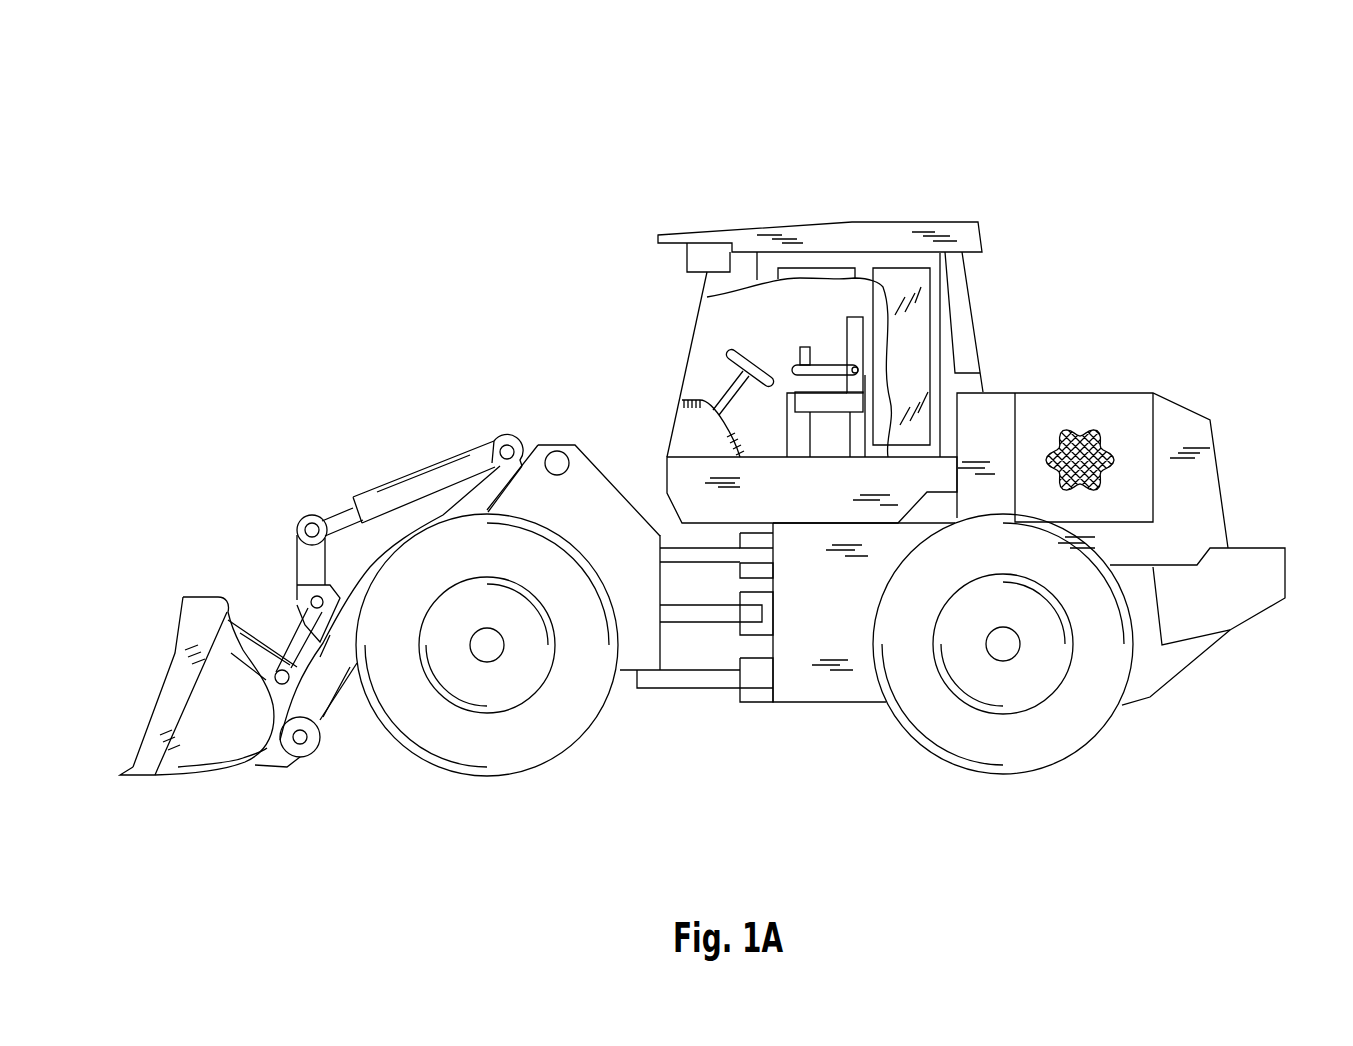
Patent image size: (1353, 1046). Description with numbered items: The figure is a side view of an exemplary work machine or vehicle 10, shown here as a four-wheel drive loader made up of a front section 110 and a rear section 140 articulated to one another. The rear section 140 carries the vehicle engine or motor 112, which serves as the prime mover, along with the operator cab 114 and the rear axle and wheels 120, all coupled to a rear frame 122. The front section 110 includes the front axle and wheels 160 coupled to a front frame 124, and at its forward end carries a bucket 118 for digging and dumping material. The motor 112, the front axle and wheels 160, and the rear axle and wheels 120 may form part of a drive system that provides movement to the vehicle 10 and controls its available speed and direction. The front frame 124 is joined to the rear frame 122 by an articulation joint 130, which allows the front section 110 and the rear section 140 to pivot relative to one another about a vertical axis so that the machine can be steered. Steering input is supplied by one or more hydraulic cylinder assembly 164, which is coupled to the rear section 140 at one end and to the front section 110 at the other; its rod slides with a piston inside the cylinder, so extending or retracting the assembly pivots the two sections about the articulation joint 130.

The work machine 10 is at (553, 166).
The front section 110 is at (488, 418).
The vehicle engine 112 is at (1103, 420).
The operator cab 114 is at (903, 218).
The bucket 118 is at (198, 597).
The rear axle and wheels 120 is at (1038, 797).
The rear frame 122 is at (827, 705).
The front frame 124 is at (624, 678).
The articulation joint 130 is at (668, 522).
The rear section 140 is at (1064, 346).
The front axle and wheels 160 is at (453, 797).
The hydraulic cylinder assembly 164 is at (704, 632).